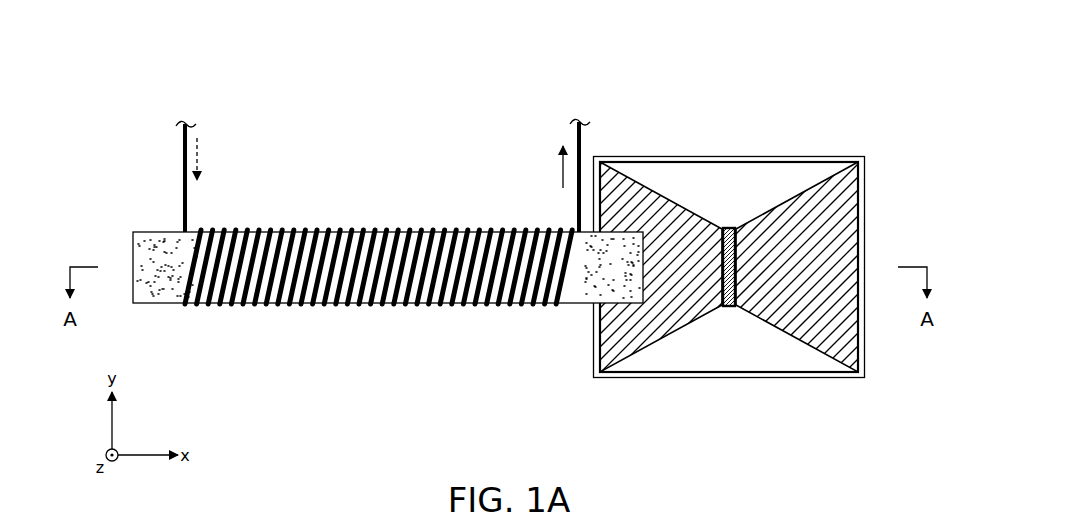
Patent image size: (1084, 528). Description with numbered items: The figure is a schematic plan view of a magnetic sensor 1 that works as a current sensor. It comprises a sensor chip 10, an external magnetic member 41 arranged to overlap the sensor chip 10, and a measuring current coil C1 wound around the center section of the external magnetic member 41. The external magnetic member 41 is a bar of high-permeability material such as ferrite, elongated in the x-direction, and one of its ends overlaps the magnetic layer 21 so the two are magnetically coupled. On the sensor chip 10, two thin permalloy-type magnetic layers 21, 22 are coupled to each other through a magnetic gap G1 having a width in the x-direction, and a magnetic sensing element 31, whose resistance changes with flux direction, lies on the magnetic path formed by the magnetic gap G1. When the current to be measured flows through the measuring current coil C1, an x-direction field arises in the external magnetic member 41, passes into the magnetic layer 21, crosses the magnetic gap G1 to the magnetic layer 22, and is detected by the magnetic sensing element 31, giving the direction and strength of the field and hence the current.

The magnetic sensor 1 is at (830, 38).
The sensor chip 10 is at (866, 200).
The magnetic layer 21 is at (648, 205).
The magnetic layer 22 is at (805, 212).
The magnetic sensing element 31 is at (720, 248).
The external magnetic member 41 is at (152, 231).
The measuring current coil C1 is at (448, 306).
The magnetic gap G1 is at (726, 313).